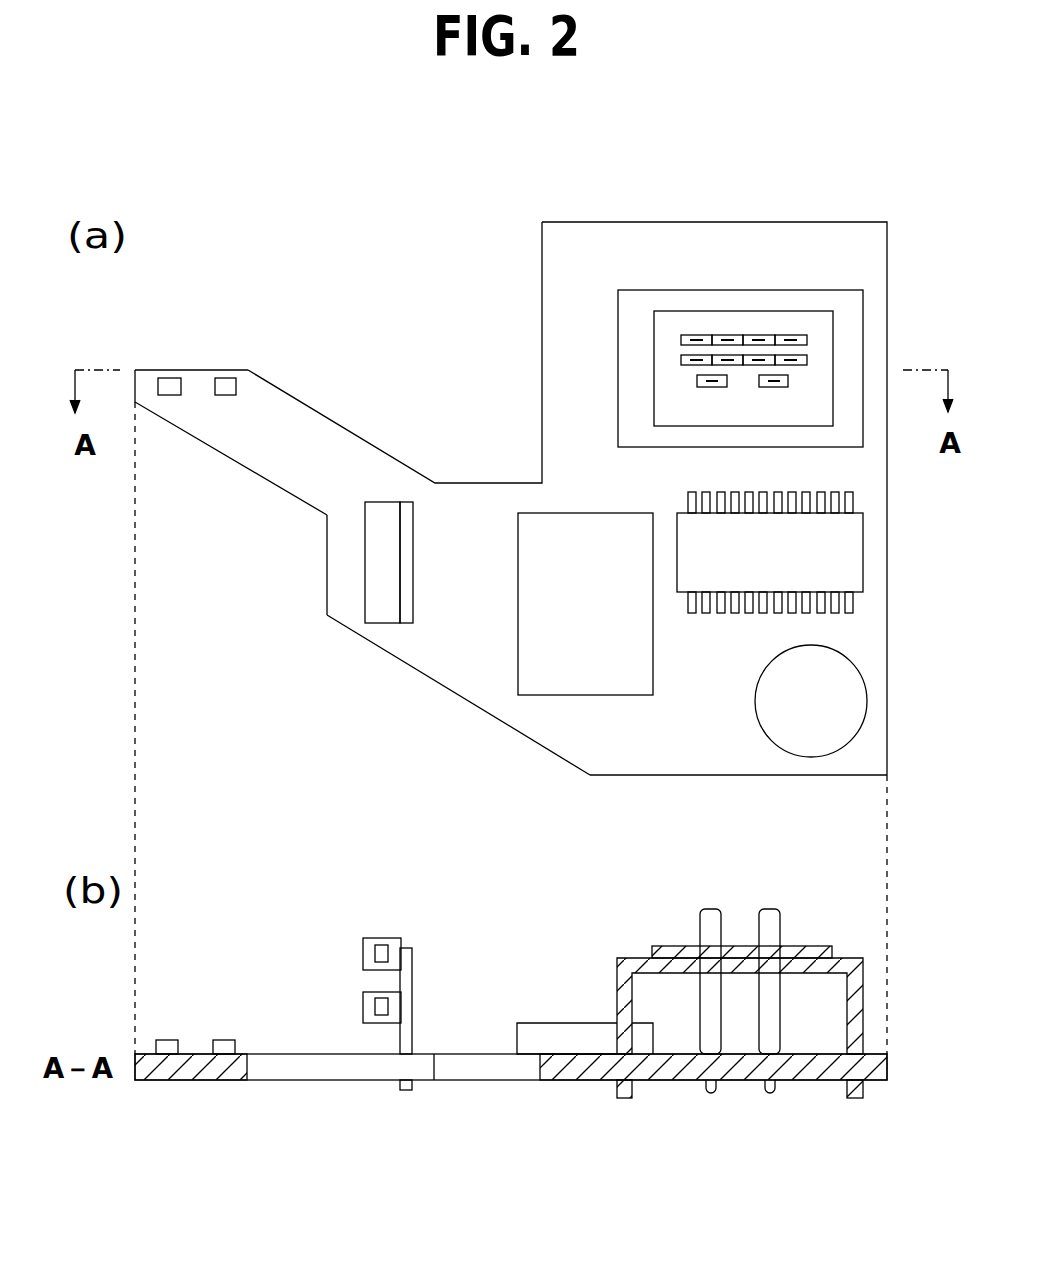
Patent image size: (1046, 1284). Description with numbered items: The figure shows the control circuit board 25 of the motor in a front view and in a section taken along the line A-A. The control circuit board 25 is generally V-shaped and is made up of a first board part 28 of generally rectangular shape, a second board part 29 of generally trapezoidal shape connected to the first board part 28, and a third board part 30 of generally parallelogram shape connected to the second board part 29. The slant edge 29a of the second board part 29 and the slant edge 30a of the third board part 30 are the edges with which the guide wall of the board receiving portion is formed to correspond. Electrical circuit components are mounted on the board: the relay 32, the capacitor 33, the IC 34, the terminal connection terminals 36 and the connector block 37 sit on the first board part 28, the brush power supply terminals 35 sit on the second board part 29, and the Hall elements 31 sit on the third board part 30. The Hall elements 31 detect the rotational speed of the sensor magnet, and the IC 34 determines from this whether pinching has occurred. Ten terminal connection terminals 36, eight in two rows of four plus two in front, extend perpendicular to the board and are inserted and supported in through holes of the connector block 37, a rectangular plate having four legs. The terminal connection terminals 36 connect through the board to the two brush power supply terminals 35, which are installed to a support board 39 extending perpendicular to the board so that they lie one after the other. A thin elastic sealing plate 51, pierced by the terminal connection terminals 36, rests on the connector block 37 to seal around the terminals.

The control circuit board 25 is at (692, 238).
The first board part 28 is at (693, 760).
The second board part 29 is at (475, 692).
The slant edge 29a is at (400, 662).
The third board part 30 is at (247, 452).
The slant edge 30a is at (323, 413).
The Hall elements 31 is at (222, 378).
The relay 32 is at (585, 688).
The capacitor 33 is at (768, 702).
The IC 34 is at (852, 563).
The brush power supply terminals 35 is at (392, 593).
The terminal connection terminals 36 is at (788, 333).
The connector block 37 is at (630, 382).
The support board 39 is at (408, 530).
The sealing plate 51 is at (663, 405).